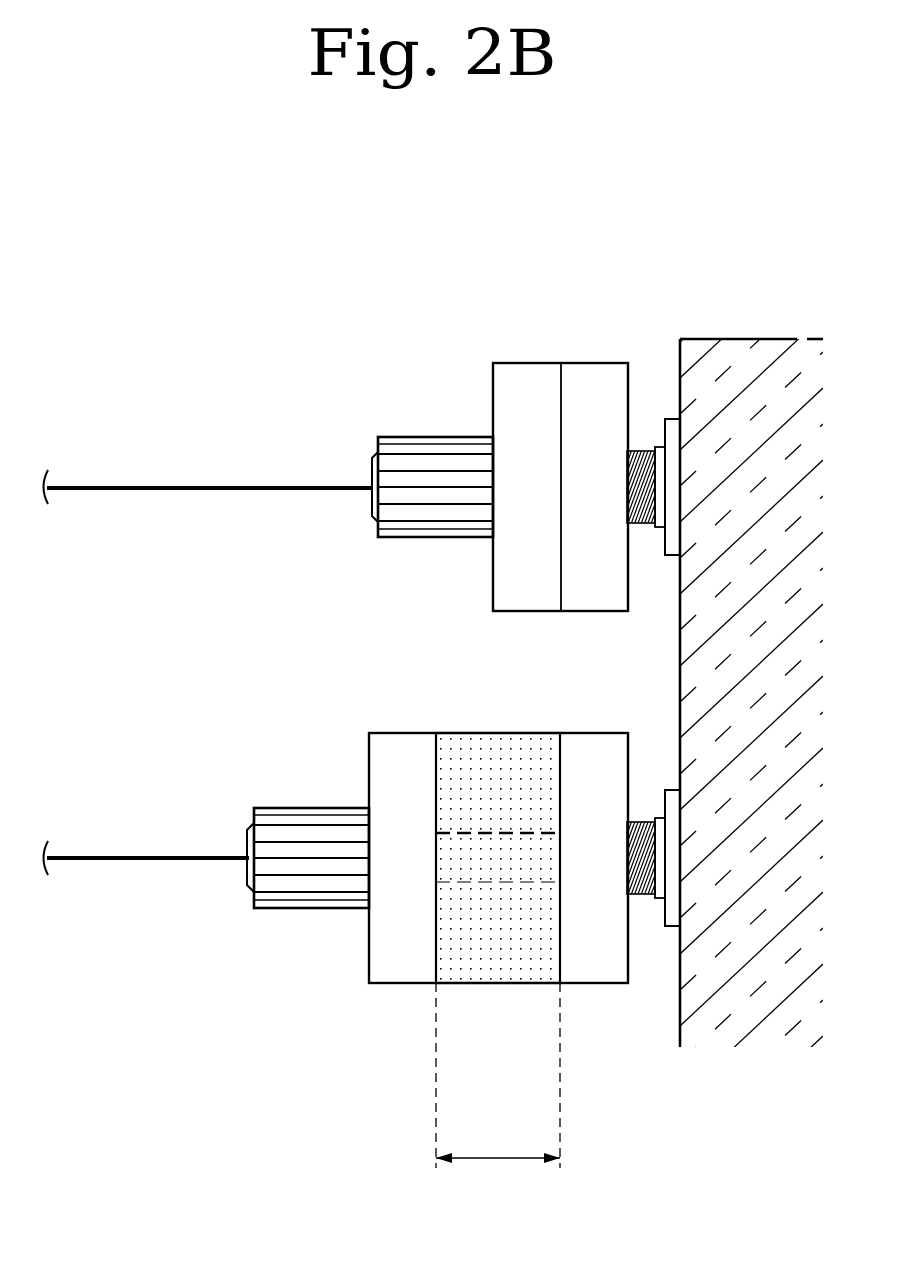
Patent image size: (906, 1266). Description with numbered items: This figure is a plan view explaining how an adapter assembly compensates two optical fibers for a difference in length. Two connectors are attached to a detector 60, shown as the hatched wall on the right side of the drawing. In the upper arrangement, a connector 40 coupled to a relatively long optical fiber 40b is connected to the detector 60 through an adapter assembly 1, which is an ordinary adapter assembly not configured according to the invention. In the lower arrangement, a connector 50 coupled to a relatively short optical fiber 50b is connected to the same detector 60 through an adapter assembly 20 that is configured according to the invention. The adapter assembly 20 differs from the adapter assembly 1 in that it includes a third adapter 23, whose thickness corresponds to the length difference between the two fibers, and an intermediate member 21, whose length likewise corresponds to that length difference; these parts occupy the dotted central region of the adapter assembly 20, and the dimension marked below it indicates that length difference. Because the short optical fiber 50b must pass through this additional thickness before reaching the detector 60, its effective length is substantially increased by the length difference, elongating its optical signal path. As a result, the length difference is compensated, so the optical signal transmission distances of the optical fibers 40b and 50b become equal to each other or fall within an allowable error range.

The adapter assembly 1 is at (525, 362).
The adapter assembly 20 is at (495, 984).
The intermediate member 21 is at (463, 848).
The third adapter 23 is at (513, 752).
The connector 40 is at (434, 437).
The optical fiber 40b is at (218, 486).
The connector 50 is at (309, 808).
The optical fiber 50b is at (170, 856).
The detector 60 is at (735, 339).